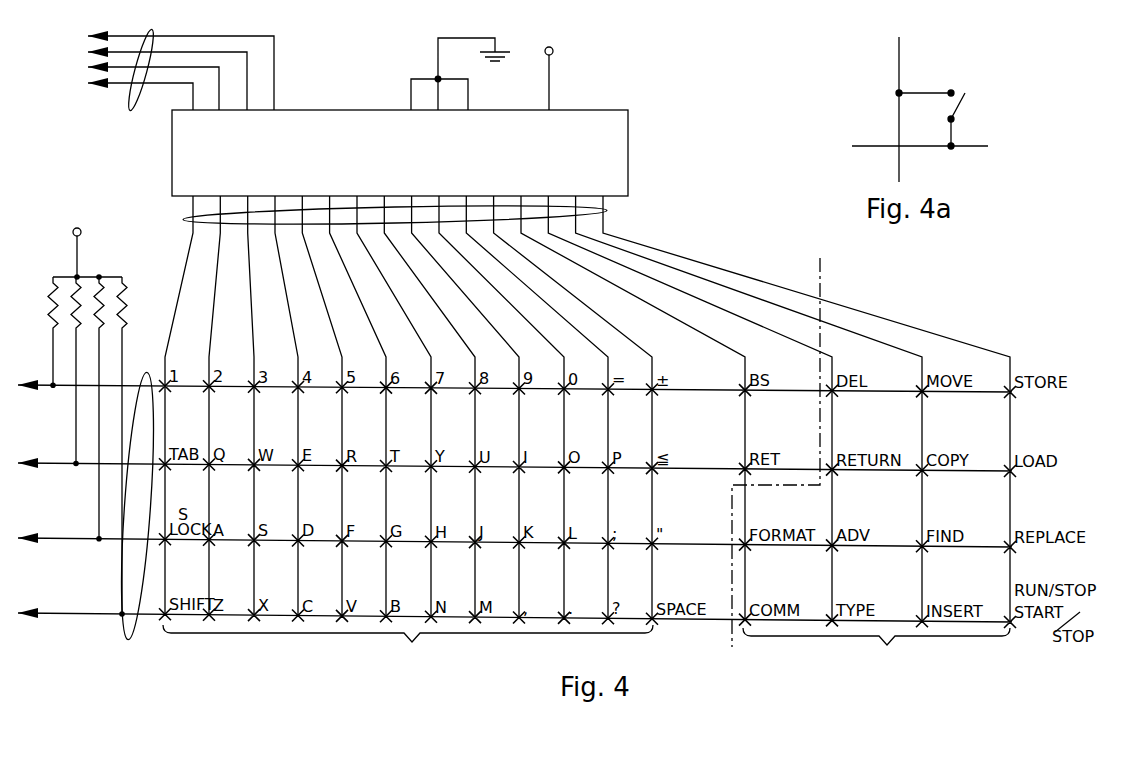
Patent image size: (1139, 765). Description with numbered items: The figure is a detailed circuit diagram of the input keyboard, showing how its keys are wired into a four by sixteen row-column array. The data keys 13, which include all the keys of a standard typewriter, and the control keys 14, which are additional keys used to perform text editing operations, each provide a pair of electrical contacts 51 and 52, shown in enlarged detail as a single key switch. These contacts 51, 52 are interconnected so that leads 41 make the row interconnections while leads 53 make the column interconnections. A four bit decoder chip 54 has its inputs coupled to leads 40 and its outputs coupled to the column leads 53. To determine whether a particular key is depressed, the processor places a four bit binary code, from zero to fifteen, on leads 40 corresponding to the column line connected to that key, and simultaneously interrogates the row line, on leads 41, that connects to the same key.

In FIG. 4, the data keys 13 is at (408, 645).
In FIG. 4, the control keys 14 is at (876, 650).
In FIG. 4, the leads 40 is at (181, 79).
In FIG. 4, the leads 41 is at (130, 640).
In FIG. 4A, the leads 41 is at (880, 145).
In FIG. 4A, the electrical contact 51 is at (917, 93).
In FIG. 4A, the electrical contact 52 is at (955, 133).
In FIG. 4, the leads 53 is at (607, 211).
In FIG. 4A, the leads 53 is at (897, 52).
In FIG. 4, the four bit decoder chip 54 is at (597, 110).